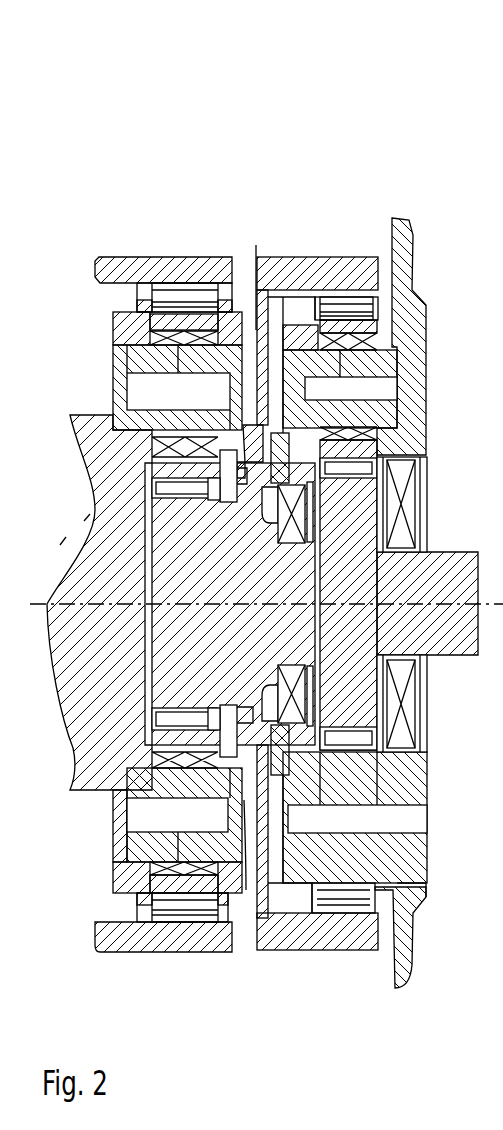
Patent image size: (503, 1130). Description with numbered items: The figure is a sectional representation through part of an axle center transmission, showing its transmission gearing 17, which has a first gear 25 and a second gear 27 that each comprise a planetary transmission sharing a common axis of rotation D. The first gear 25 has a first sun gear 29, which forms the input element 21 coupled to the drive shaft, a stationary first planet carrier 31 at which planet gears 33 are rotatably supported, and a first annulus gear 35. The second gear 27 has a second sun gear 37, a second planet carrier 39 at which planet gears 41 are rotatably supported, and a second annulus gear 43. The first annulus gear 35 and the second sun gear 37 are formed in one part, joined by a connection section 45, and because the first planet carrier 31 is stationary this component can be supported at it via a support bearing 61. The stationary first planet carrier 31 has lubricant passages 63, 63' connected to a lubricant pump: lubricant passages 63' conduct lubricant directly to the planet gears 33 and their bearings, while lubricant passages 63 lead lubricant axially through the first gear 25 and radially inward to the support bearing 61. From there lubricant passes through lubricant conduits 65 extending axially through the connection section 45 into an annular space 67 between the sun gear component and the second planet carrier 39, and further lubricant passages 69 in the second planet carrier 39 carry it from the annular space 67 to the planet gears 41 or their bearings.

The transmission gearing 17 is at (243, 184).
The second gear 27 is at (187, 231).
The first gear 25 is at (347, 219).
The second annulus gear 43 is at (205, 272).
The connection section 45 is at (262, 345).
The first annulus gear 35 is at (332, 283).
The planet gears 41 is at (153, 327).
The planet gears 33 is at (373, 324).
The second planet carrier 39 is at (125, 396).
The lubricant passage 63' is at (376, 389).
The axis of rotation D is at (79, 602).
The input element 21 is at (455, 595).
The first sun gear 29 is at (427, 603).
The annular space 67 is at (231, 722).
The lubricant conduits 65 is at (257, 717).
The support bearing 61 is at (303, 689).
The second sun gear 37 is at (167, 679).
The first planet carrier 31 is at (414, 774).
The lubricant passage 63 is at (381, 828).
The lubricant passages 69 is at (240, 748).